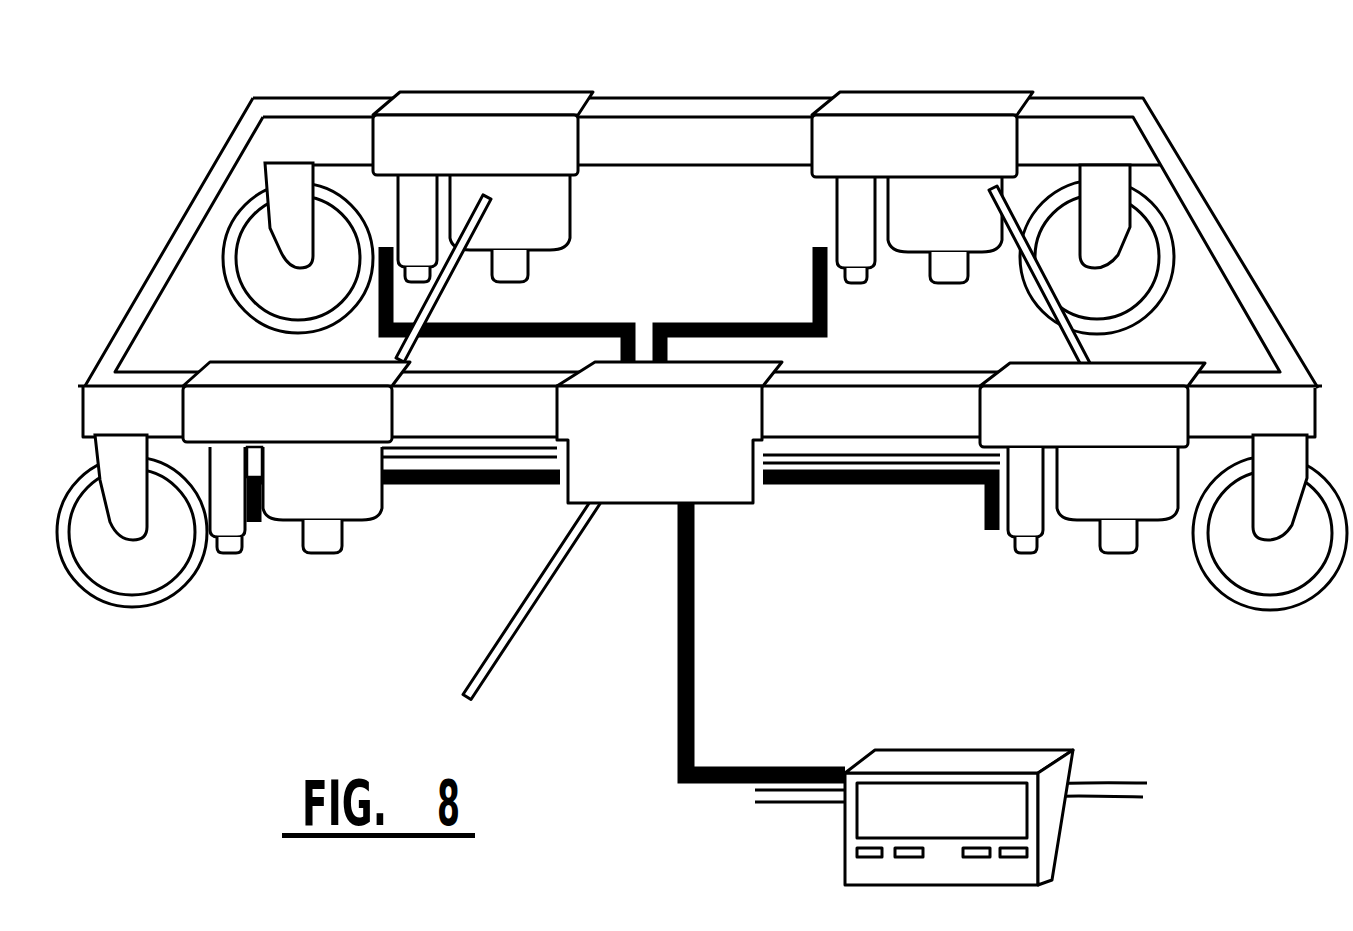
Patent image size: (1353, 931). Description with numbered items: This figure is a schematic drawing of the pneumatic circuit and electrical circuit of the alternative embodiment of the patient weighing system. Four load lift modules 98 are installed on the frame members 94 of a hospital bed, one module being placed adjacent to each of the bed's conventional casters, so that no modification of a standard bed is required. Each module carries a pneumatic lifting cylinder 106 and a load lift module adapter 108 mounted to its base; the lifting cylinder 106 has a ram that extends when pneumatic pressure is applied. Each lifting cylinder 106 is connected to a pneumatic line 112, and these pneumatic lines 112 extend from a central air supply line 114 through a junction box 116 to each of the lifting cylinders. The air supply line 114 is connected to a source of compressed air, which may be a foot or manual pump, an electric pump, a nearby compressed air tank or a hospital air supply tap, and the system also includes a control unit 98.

The frame members 94 is at (658, 98).
The control unit 98 is at (378, 513).
The pneumatic lifting cylinder 106 is at (1083, 525).
The load lift module adapter 108 is at (1017, 532).
The pneumatic line 112 is at (878, 455).
The central air supply line 114 is at (545, 591).
The junction box 116 is at (713, 362).